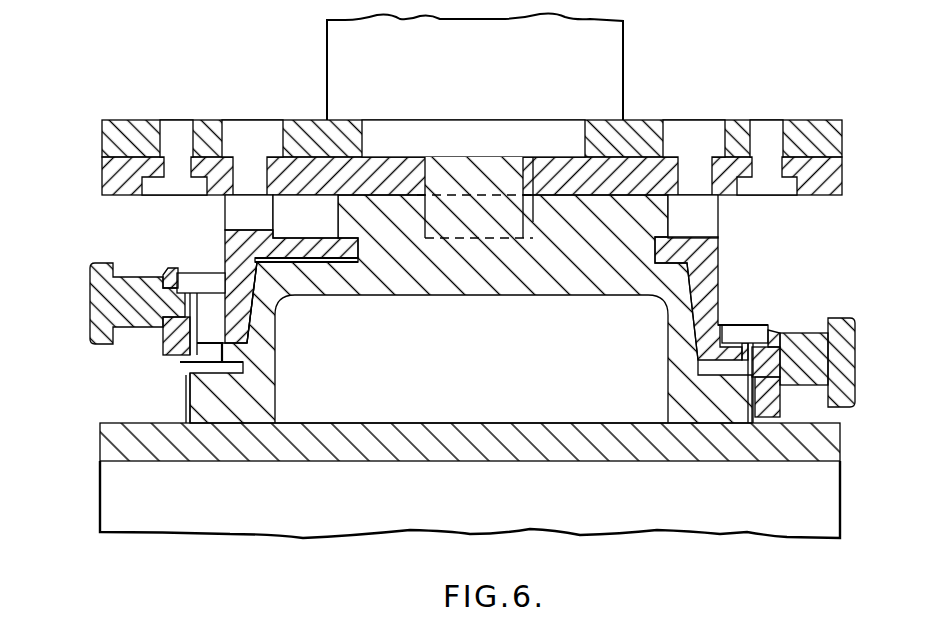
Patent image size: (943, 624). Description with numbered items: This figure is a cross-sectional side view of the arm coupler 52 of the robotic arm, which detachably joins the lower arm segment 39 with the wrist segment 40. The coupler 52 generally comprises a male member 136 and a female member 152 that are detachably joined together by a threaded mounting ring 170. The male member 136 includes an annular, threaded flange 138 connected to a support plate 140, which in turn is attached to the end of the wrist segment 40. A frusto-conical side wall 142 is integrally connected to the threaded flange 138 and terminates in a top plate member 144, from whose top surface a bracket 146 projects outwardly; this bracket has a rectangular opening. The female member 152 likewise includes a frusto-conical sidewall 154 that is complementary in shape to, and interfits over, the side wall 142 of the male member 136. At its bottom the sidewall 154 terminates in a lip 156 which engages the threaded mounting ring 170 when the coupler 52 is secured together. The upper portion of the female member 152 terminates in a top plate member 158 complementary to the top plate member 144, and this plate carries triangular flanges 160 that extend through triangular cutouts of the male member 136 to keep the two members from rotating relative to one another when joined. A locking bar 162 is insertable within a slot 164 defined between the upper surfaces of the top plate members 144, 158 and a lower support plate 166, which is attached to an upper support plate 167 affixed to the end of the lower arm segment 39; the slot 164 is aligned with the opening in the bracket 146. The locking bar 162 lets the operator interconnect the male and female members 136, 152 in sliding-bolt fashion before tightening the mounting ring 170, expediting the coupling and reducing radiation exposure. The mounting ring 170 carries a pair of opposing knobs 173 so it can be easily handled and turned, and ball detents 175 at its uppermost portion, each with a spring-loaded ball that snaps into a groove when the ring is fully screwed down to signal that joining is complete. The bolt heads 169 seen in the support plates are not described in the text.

The lower arm segment 39 is at (496, 84).
The wrist segment 40 is at (476, 509).
The arm coupler 52 is at (441, 117).
The male member 136 is at (690, 277).
The annular, threaded flange 138 is at (184, 395).
The support plate 140 is at (385, 443).
The frusto-conical side wall 142 is at (683, 302).
The top plate member 144 is at (569, 274).
The bracket 146 is at (489, 178).
The female member 152 is at (221, 253).
The frusto-conical sidewall 154 is at (277, 325).
The lip 156 is at (204, 366).
The top plate member 158 is at (321, 250).
The triangular flanges 160 is at (338, 248).
The locking bar 162 is at (658, 217).
The slot 164 is at (221, 207).
The lower support plate 166 is at (110, 175).
The upper support plate 167 is at (107, 137).
The bolts 169 is at (242, 133).
The threaded mounting ring 170 is at (160, 270).
The opposing knobs 173 is at (107, 292).
The ball detents 175 is at (753, 333).